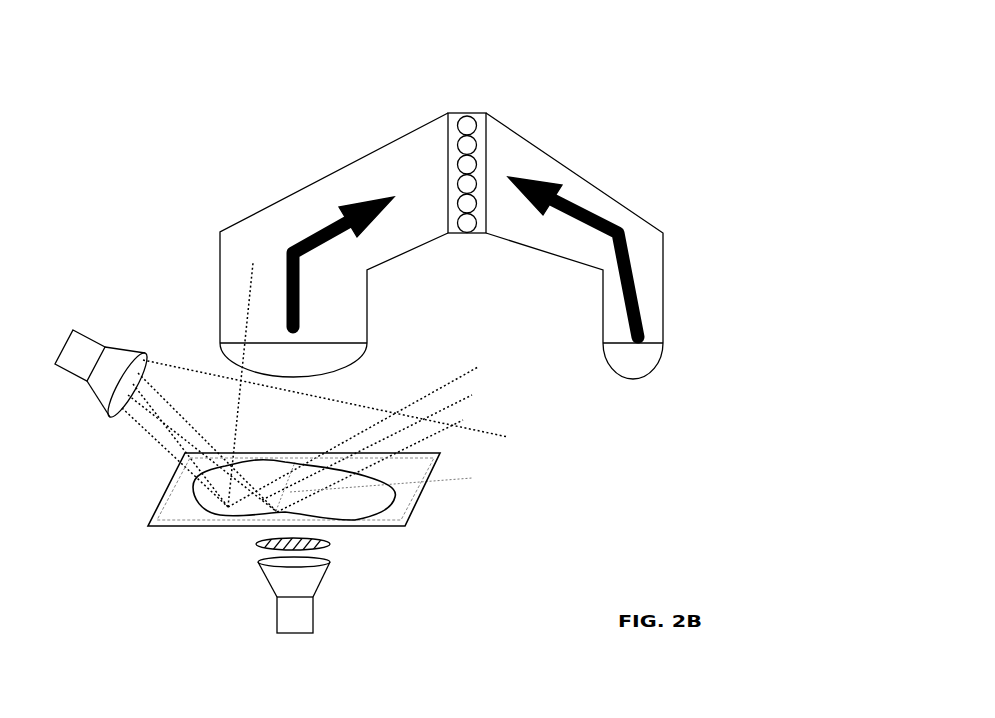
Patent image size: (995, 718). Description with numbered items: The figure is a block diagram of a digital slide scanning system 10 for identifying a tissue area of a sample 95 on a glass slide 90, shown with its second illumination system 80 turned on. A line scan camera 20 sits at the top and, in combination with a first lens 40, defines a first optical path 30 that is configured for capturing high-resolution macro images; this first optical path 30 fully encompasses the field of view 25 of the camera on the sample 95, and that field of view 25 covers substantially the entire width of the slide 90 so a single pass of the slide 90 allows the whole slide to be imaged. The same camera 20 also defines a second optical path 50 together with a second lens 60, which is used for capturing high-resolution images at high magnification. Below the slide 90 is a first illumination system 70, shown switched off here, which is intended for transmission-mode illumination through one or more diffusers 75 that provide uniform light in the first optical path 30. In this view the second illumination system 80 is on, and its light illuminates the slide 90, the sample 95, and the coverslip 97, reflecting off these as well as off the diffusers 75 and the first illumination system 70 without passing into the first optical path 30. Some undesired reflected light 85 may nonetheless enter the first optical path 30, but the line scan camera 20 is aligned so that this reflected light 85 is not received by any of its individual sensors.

The digital slide scanning system 10 is at (590, 41).
The line scan camera 20 is at (467, 113).
The field of view 25 is at (413, 484).
The first optical path 30 is at (338, 172).
The first lens 40 is at (357, 363).
The second optical path 50 is at (588, 177).
The second lens 60 is at (665, 360).
The first illumination system 70 is at (277, 613).
The diffusers 75 is at (257, 544).
The second illumination system 80 is at (88, 340).
The reflected light 85 is at (250, 302).
The glass slide 90 is at (413, 503).
The sample 95 is at (358, 507).
The coverslip 97 is at (167, 498).